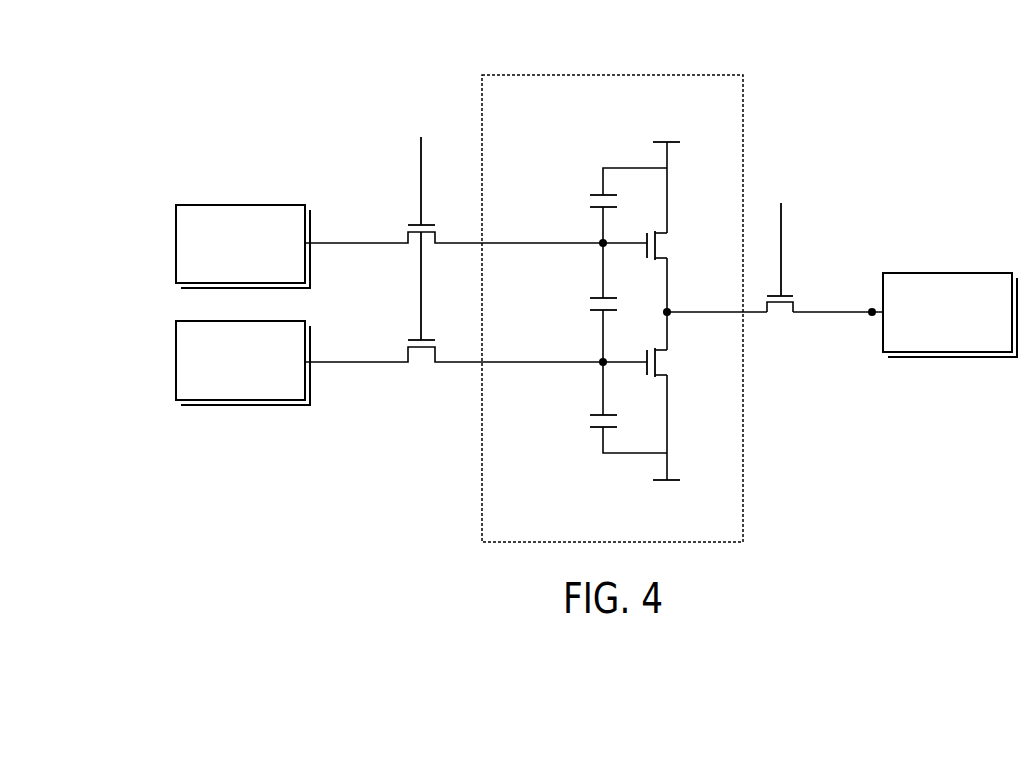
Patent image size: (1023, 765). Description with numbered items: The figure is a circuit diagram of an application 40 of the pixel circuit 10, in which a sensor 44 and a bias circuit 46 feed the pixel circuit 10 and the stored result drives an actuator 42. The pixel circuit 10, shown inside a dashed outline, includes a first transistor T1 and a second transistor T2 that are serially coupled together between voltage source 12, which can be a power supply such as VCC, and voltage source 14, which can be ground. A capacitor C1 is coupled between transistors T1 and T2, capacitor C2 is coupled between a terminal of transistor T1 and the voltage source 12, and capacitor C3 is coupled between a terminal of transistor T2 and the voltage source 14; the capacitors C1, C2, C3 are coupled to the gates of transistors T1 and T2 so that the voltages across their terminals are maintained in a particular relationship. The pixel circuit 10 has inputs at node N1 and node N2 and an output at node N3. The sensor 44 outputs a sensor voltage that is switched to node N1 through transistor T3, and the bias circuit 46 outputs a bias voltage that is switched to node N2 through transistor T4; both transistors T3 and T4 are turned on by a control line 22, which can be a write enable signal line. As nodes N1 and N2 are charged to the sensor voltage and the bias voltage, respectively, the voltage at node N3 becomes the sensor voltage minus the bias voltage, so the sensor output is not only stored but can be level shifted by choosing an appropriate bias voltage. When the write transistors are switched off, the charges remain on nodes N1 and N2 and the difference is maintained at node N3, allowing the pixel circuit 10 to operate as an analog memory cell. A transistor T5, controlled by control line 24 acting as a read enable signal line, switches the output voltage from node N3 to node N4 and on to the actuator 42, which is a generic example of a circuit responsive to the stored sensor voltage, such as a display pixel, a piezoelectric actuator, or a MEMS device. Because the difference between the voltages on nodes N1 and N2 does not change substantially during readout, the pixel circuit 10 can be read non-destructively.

The system 40 is at (226, 44).
The pixel circuit 10 is at (480, 92).
The voltage source 12 is at (660, 141).
The voltage source 14 is at (658, 482).
The control line 22 is at (420, 170).
The control line 24 is at (781, 250).
The actuator 42 is at (947, 272).
The sensor 44 is at (240, 205).
The bias circuit 46 is at (245, 400).
The first transistor T1 is at (674, 245).
The second transistor T2 is at (677, 362).
The transistor T3 is at (405, 250).
The transistor T4 is at (421, 366).
The transistor T5 is at (780, 322).
The capacitor C1 is at (586, 302).
The capacitor C2 is at (611, 205).
The capacitor C3 is at (611, 407).
The node N1 is at (603, 243).
The node N2 is at (603, 362).
The node N3 is at (667, 312).
The node N4 is at (872, 312).